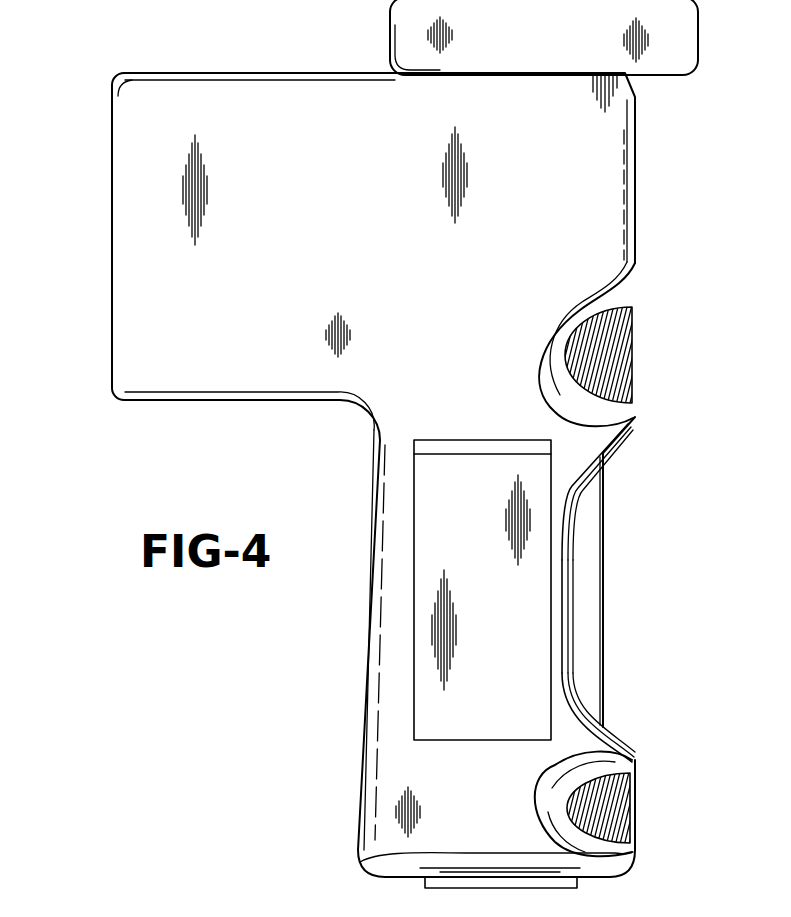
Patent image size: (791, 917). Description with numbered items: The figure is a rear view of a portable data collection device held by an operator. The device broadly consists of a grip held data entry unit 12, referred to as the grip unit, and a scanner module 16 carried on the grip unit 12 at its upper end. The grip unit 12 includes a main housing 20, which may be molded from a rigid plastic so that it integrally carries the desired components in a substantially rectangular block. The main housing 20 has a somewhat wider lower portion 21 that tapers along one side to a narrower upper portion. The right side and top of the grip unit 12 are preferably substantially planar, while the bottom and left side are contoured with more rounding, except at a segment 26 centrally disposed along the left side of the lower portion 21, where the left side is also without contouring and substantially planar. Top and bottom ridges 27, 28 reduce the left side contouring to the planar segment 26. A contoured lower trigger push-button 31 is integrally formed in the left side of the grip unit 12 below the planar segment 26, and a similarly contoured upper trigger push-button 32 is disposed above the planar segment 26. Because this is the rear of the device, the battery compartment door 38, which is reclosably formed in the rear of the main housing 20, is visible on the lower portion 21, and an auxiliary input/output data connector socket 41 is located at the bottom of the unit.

The grip held data entry unit 12 is at (636, 178).
The scanner module 16 is at (390, 27).
The main housing 20 is at (112, 210).
The lower portion 21 is at (376, 667).
The planar segment 26 is at (588, 641).
The top ridge 27 is at (617, 440).
The bottom ridge 28 is at (618, 743).
The lower trigger push-button 31 is at (600, 803).
The upper textured grip pad 32 is at (612, 372).
The battery compartment door 38 is at (501, 615).
The auxiliary input/output data connector socket 41 is at (448, 880).